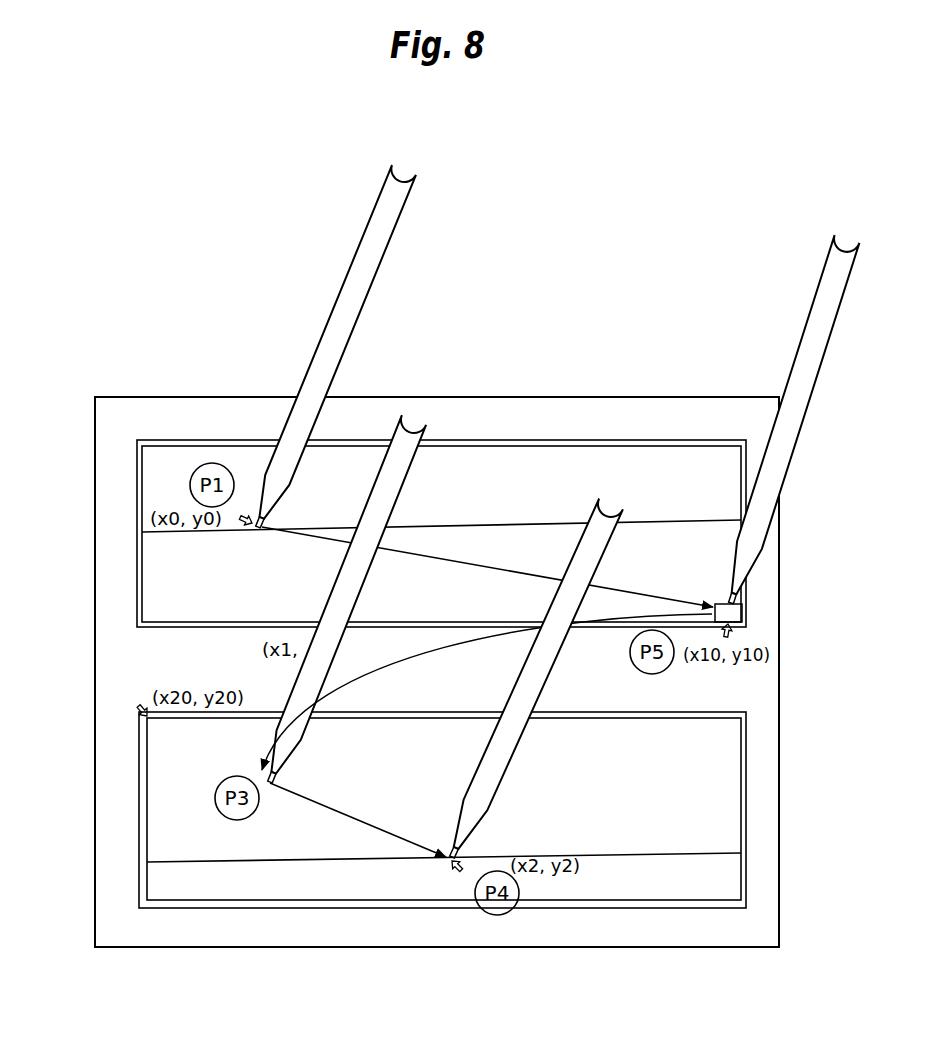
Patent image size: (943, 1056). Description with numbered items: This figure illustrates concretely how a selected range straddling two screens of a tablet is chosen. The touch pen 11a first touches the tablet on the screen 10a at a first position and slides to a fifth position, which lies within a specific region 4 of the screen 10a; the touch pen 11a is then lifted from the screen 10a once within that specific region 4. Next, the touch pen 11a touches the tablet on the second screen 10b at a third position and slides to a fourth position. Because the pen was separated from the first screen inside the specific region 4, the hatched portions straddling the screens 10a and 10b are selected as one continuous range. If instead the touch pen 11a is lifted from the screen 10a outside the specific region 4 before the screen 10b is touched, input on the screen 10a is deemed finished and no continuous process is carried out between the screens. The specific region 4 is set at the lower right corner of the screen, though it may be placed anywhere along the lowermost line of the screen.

The screen 10a is at (136, 456).
The screen 10b is at (138, 731).
The touch pen 11a is at (363, 236).
The specific region 4 is at (742, 610).